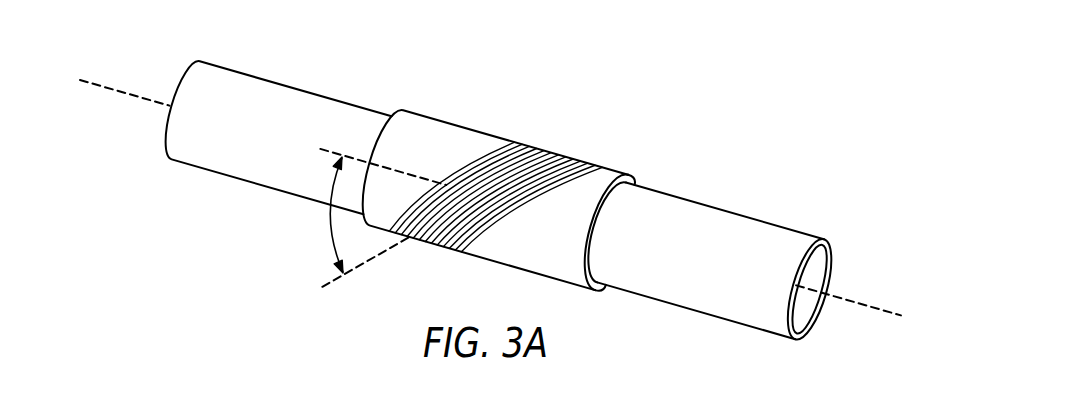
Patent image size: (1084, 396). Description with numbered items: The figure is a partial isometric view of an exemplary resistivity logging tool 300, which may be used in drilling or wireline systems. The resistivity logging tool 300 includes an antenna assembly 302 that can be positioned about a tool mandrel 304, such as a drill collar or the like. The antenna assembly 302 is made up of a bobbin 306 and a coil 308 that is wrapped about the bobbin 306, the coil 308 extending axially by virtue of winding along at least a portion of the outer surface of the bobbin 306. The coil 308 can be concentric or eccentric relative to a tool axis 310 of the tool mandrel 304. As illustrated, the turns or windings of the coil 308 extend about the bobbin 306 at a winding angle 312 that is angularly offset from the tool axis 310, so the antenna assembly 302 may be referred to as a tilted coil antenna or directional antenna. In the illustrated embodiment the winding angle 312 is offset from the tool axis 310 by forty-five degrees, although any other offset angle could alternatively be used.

The resistivity logging tool 300 is at (490, 196).
The antenna assembly 302 is at (522, 121).
The tool mandrel 304 is at (725, 209).
The bobbin 306 is at (433, 116).
The coil 308 is at (567, 156).
The tool axis 310 is at (853, 301).
The winding angle 312 is at (365, 230).